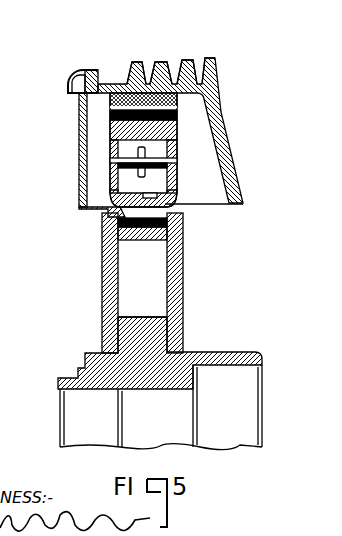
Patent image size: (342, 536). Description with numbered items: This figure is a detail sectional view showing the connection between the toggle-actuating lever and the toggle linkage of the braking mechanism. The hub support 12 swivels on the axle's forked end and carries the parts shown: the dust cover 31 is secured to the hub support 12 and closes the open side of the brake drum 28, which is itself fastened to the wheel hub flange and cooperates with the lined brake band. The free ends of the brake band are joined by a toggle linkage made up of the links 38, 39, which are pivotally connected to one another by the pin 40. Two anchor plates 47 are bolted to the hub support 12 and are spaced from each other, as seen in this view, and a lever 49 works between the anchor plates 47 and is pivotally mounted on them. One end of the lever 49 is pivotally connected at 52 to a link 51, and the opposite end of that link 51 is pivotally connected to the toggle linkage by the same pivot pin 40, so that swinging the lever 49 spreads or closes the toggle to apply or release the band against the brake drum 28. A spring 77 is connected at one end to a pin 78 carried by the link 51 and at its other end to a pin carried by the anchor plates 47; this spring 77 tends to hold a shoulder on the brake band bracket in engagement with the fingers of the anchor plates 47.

The hub support 12 is at (173, 372).
The brake drum 28 is at (223, 97).
The dust cover 31 is at (82, 157).
The link 38 is at (122, 97).
The link 39 is at (143, 98).
The pin 40 is at (77, 97).
The anchor plates 47 is at (108, 296).
The lever 49 is at (148, 193).
The link 51 is at (81, 204).
The pivotal connection 52 is at (181, 229).
The spring 77 is at (139, 152).
The pin 78 is at (176, 147).